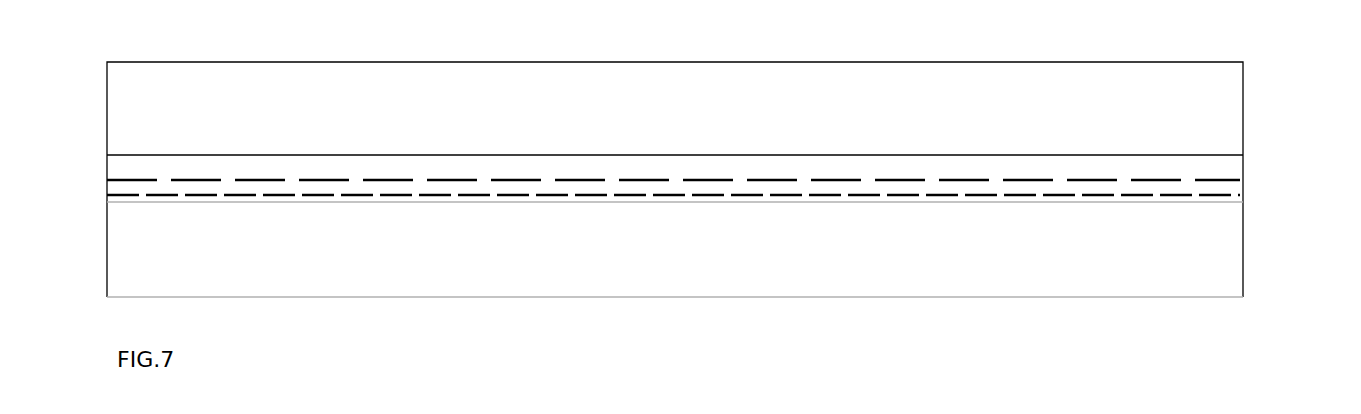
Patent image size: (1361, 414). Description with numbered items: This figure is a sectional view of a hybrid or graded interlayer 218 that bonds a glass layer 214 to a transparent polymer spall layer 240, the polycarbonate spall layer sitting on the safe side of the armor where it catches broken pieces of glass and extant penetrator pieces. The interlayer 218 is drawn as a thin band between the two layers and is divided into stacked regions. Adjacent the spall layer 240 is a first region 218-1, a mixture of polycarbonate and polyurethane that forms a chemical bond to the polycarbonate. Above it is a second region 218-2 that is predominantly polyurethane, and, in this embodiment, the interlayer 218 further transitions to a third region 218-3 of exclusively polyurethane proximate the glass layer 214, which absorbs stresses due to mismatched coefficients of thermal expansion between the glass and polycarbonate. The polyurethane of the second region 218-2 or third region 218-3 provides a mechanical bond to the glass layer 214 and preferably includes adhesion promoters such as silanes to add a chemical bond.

The layers 214 is at (675, 108).
The transparent polymer spall layer 240 is at (675, 249).
The interlayer 218 is at (702, 192).
The first region 218-1 is at (1202, 197).
The second region 218-2 is at (1215, 187).
The third region 218-3 is at (1213, 167).